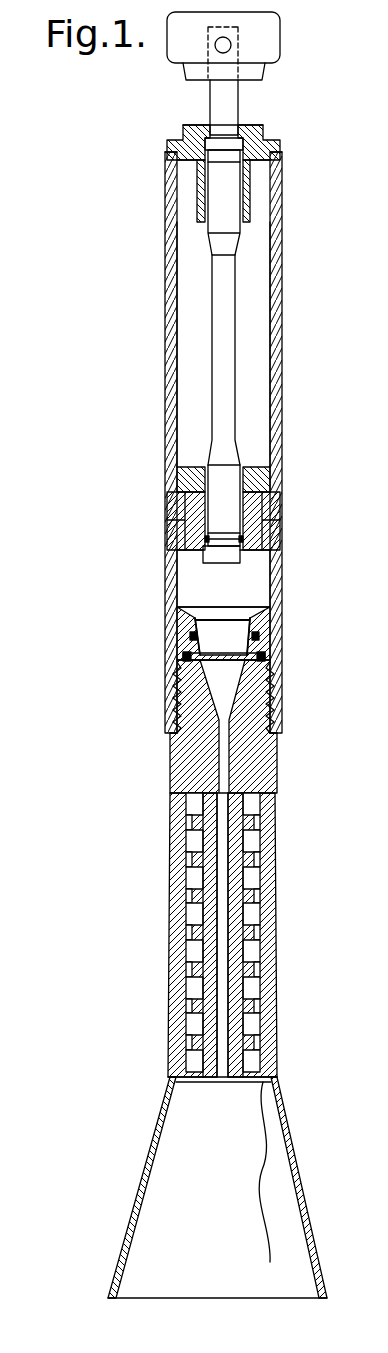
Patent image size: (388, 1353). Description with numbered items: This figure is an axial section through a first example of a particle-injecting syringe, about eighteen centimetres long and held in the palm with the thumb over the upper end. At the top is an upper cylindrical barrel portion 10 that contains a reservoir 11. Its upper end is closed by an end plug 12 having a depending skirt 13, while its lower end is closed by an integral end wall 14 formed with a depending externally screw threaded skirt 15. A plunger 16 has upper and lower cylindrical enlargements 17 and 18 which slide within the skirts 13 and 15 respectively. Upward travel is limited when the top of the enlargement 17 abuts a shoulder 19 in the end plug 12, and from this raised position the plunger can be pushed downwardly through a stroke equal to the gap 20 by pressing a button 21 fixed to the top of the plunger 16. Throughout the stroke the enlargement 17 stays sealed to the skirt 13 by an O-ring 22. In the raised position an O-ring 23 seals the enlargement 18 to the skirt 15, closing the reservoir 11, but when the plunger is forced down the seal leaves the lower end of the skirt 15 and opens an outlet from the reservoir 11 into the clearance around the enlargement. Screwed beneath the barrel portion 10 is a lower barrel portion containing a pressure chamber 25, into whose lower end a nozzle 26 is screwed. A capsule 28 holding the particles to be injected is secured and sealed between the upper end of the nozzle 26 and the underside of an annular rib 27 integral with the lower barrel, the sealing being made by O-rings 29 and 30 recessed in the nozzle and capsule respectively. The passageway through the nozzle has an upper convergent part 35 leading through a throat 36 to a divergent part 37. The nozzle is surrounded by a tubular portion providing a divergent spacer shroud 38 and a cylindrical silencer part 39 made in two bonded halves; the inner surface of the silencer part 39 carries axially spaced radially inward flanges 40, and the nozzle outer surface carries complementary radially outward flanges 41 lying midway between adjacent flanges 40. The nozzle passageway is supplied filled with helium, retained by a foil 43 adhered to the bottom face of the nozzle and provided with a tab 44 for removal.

The upper cylindrical barrel portion 10 is at (281, 350).
The reservoir 11 is at (257, 283).
The end plug 12 is at (283, 143).
The depending skirt 13 is at (252, 192).
The integral end wall 14 is at (283, 472).
The externally screw threaded skirt 15 is at (168, 520).
The plunger 16 is at (215, 291).
The upper cylindrical enlargement 17 is at (222, 200).
The lower cylindrical enlargement 18 is at (222, 487).
The shoulder 19 is at (250, 125).
The gap 20 is at (191, 96).
The button 21 is at (265, 38).
The O-ring 22 is at (166, 158).
The O-ring 23 is at (240, 536).
The pressure chamber 25 is at (257, 570).
The nozzle 26 is at (283, 733).
The annular rib 27 is at (180, 620).
The capsule 28 is at (187, 648).
The O-ring 29 is at (265, 658).
The O-ring 30 is at (283, 621).
The convergent part 35 is at (175, 697).
The throat 36 is at (180, 722).
The divergent part 37 is at (218, 1018).
The divergent spacer shroud 38 is at (287, 1135).
The cylindrical silencer part 39 is at (270, 833).
The radially inwardly projecting flanges 40 is at (250, 884).
The radially outwardly extending flanges 41 is at (247, 938).
The foil 43 is at (220, 1085).
The tab 44 is at (270, 1240).